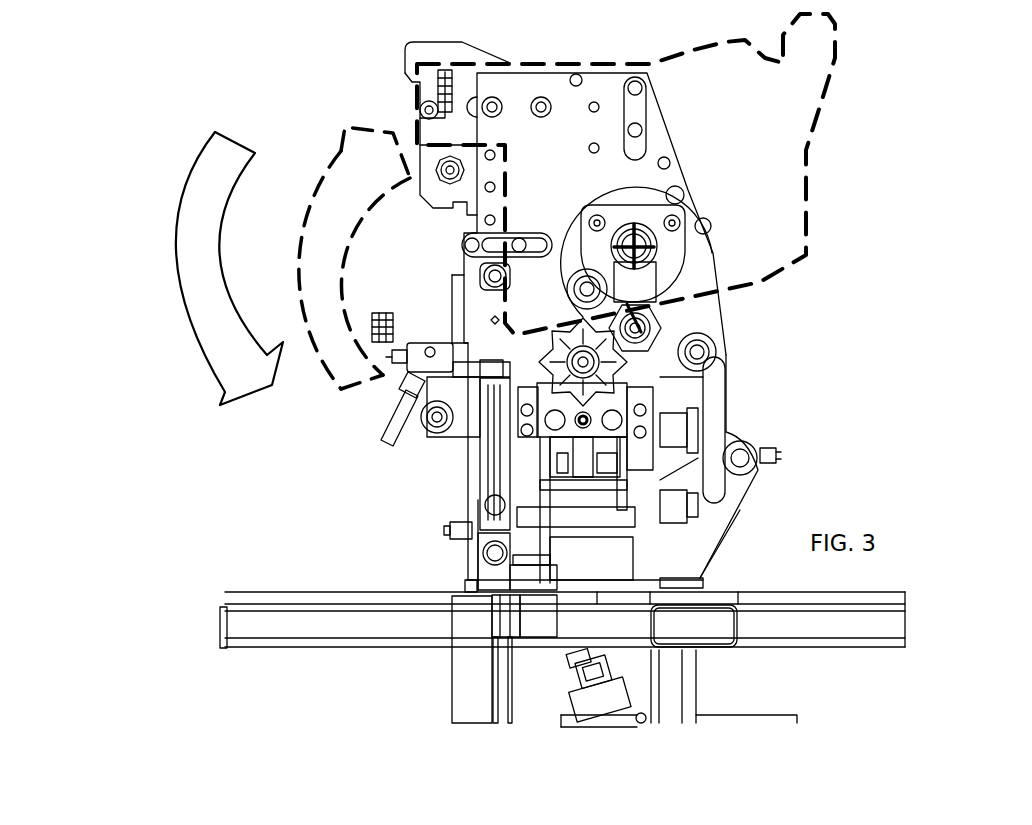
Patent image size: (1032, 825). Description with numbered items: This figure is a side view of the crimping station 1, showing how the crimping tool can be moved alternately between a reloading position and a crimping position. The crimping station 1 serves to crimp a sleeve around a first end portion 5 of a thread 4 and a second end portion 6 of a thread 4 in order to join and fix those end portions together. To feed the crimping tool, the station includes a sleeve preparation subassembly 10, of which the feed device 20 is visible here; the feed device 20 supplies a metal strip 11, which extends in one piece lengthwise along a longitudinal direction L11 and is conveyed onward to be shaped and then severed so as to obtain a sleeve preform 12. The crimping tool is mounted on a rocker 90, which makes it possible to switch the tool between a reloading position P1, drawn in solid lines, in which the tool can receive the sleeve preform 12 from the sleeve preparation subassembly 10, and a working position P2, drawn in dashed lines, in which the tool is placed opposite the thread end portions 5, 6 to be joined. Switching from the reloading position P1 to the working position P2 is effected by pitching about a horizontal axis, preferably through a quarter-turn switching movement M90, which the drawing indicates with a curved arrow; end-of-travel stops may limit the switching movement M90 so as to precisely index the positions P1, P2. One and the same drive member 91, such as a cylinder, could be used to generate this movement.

The crimping station 1 is at (193, 130).
The thread 4 is at (320, 117).
The first end portion 5 is at (320, 117).
The second end portion 6 is at (418, 108).
The sleeve preparation subassembly 10 is at (416, 528).
The metal strip 11 is at (258, 388).
The longitudinal direction L11 is at (444, 398).
The sleeve preform 12 is at (320, 255).
The reloading position P1 is at (457, 455).
The working position P2 is at (415, 88).
The feed device 20 is at (467, 480).
The rocker 90 is at (667, 260).
The drive member 91 is at (595, 700).
The switching movement M90 is at (333, 257).